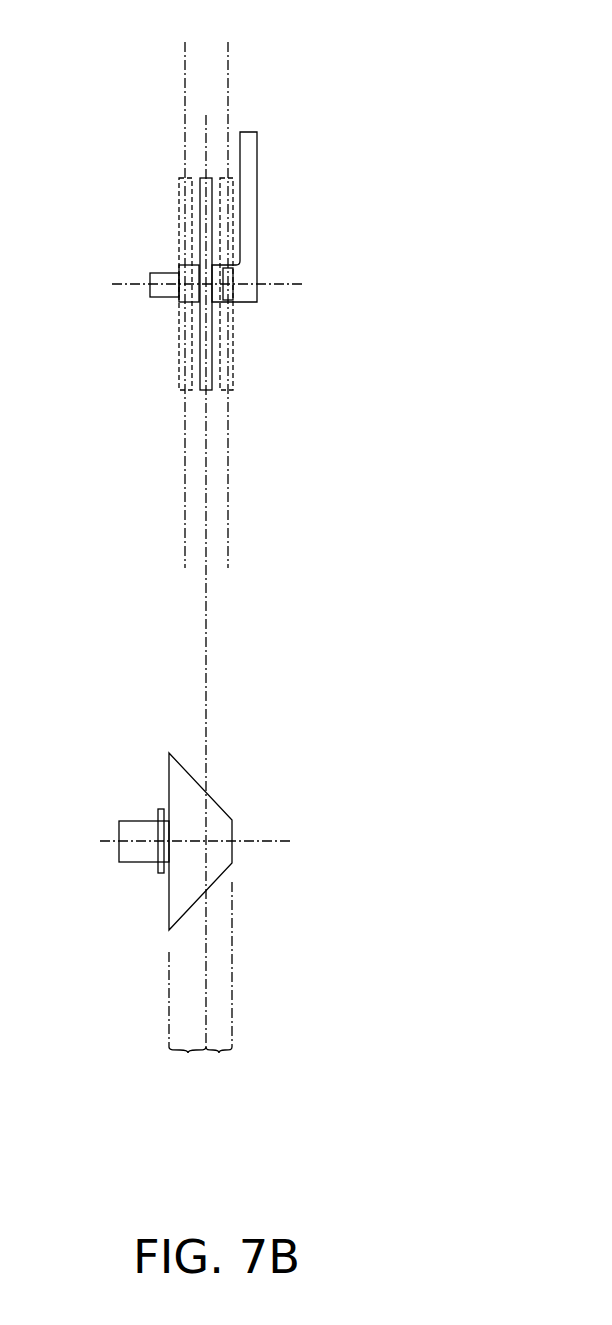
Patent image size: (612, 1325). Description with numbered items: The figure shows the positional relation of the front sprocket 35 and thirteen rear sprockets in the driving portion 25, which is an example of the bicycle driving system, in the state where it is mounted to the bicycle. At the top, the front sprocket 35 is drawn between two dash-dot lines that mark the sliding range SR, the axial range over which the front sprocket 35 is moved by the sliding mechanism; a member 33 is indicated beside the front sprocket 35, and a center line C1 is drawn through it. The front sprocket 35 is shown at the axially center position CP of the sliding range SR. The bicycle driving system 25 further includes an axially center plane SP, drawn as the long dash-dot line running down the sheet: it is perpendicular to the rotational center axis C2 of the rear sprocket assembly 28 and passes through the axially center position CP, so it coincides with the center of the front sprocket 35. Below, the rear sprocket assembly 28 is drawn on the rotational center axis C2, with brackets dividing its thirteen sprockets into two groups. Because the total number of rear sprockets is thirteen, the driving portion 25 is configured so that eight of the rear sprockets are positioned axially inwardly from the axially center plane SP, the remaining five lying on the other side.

The driving portion 25 is at (370, 75).
The front sprocket 35 is at (195, 173).
The lever 33 is at (287, 202).
The axially center position CP is at (205, 283).
The center line C1 is at (208, 287).
The rotational center axis C2 is at (198, 843).
The axially center plane SP is at (205, 633).
The sliding range SR is at (228, 42).
The rear sprocket assembly 28 is at (258, 878).